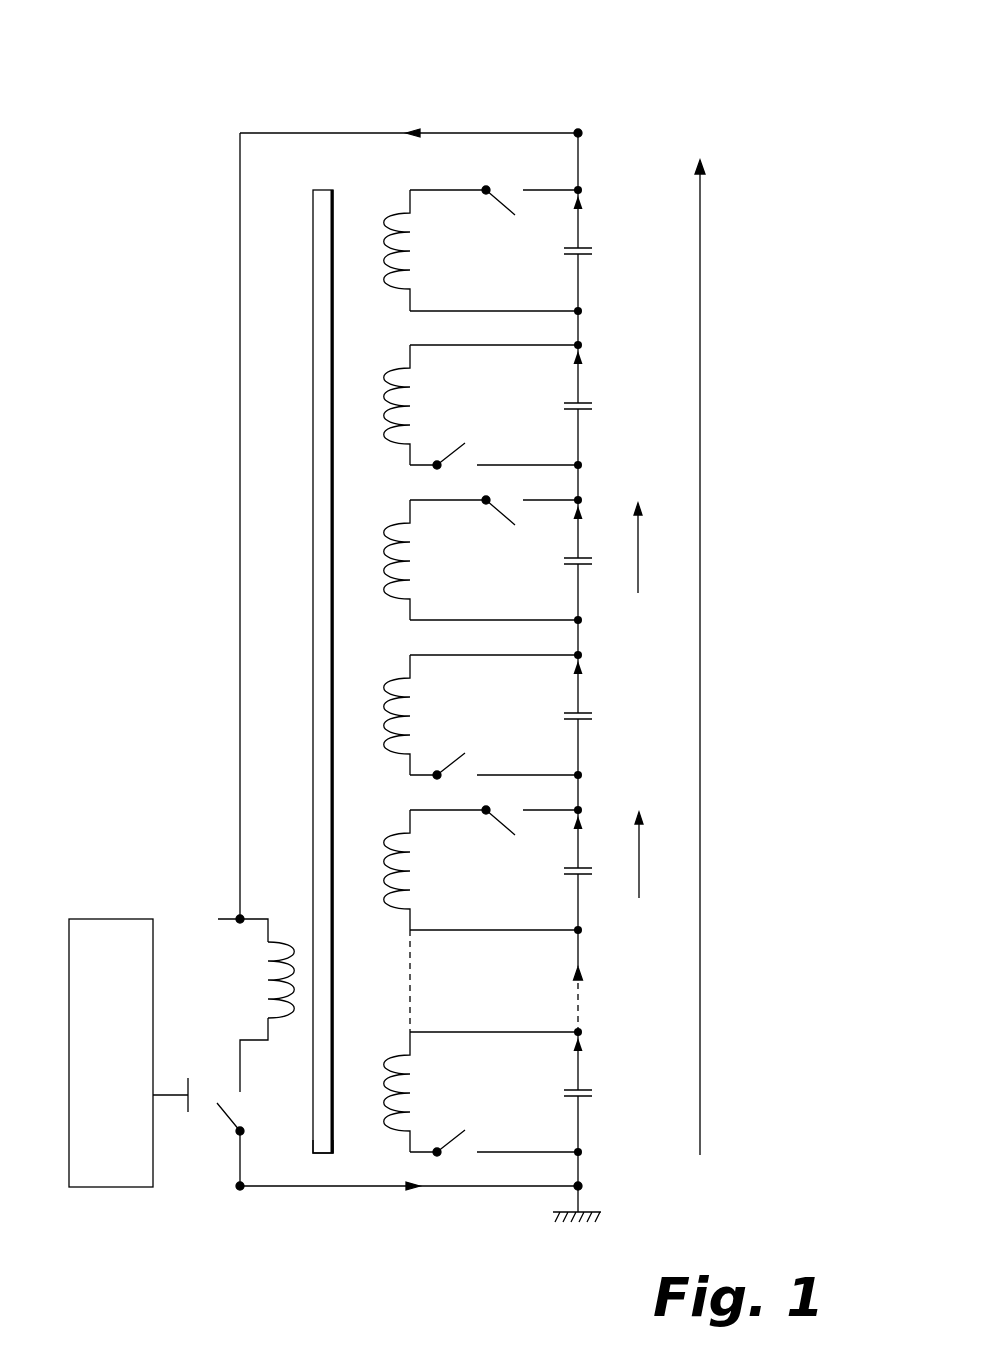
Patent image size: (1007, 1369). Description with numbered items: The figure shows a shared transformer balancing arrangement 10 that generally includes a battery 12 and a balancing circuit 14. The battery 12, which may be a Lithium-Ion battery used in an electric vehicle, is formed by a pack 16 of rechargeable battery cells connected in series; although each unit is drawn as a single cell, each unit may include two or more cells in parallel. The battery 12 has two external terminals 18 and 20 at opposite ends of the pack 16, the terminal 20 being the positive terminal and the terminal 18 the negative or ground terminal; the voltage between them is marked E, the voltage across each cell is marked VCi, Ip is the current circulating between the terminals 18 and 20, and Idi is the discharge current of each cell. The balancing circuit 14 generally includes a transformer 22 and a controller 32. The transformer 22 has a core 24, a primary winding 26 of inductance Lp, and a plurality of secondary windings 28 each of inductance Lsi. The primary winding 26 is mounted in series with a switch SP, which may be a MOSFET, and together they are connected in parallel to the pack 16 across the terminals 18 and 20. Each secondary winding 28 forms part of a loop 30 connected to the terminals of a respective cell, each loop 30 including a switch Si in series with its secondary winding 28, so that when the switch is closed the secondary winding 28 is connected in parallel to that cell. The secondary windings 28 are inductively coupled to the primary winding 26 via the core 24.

The shared transformer balancing arrangement 10 is at (157, 51).
The battery 12 is at (760, 402).
The balancing circuit 14 is at (173, 797).
The pack 16 is at (642, 373).
The external terminal 18 is at (582, 1186).
The external terminal 20 is at (579, 133).
The transformer 22 is at (323, 1172).
The core 24 is at (313, 670).
The primary winding 26 is at (268, 942).
The secondary winding 28 is at (400, 212).
The loop 30 is at (486, 298).
The controller 32 is at (69, 1052).